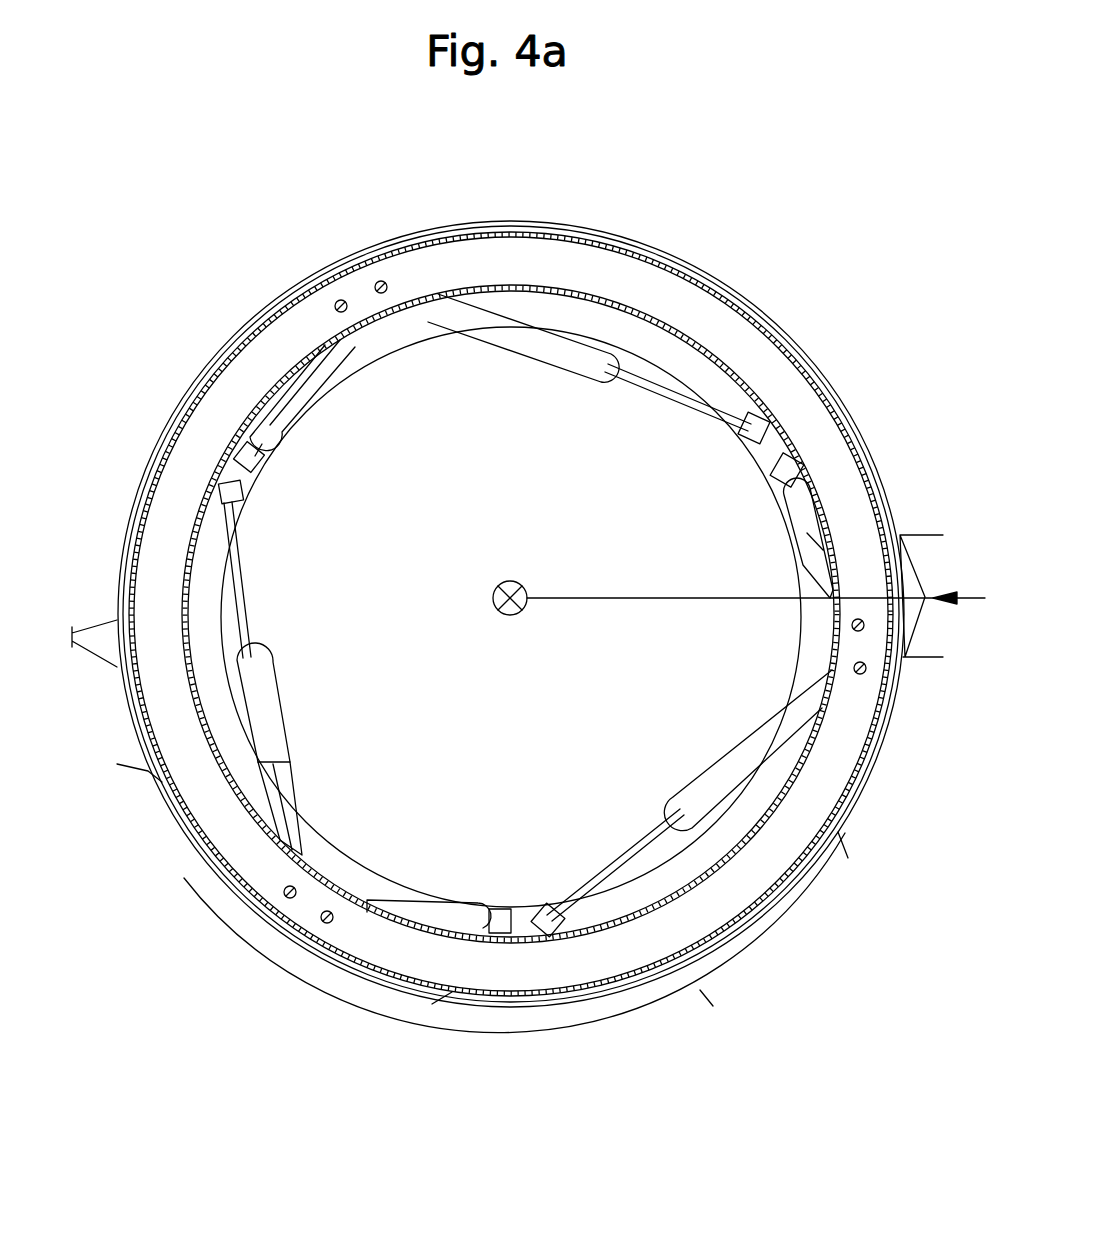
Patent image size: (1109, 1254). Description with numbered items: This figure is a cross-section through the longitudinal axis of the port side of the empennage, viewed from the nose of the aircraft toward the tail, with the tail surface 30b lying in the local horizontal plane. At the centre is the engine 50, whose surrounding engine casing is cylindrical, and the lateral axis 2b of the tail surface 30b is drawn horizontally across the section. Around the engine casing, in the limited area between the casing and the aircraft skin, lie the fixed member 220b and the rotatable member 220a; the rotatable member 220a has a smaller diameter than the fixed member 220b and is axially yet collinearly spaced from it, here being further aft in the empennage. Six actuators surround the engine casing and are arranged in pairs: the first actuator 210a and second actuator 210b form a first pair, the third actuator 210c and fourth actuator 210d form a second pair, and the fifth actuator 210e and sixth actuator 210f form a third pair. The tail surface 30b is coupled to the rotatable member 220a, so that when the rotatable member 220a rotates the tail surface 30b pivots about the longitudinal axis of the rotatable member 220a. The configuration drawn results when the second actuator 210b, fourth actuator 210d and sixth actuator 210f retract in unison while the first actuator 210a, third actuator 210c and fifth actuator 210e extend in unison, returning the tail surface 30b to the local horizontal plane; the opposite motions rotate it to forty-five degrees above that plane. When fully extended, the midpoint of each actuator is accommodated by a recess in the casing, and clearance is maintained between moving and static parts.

The fixed member 220b is at (523, 232).
The rotatable member 220a is at (622, 283).
The first actuator 210a is at (628, 857).
The second actuator 210b is at (440, 915).
The third actuator 210c is at (232, 528).
The fourth actuator 210d is at (278, 402).
The fifth actuator 210e is at (652, 386).
The sixth actuator 210f is at (808, 490).
The lateral axis 2b is at (963, 596).
The tail surface 30b is at (918, 652).
The engine 50 is at (625, 710).